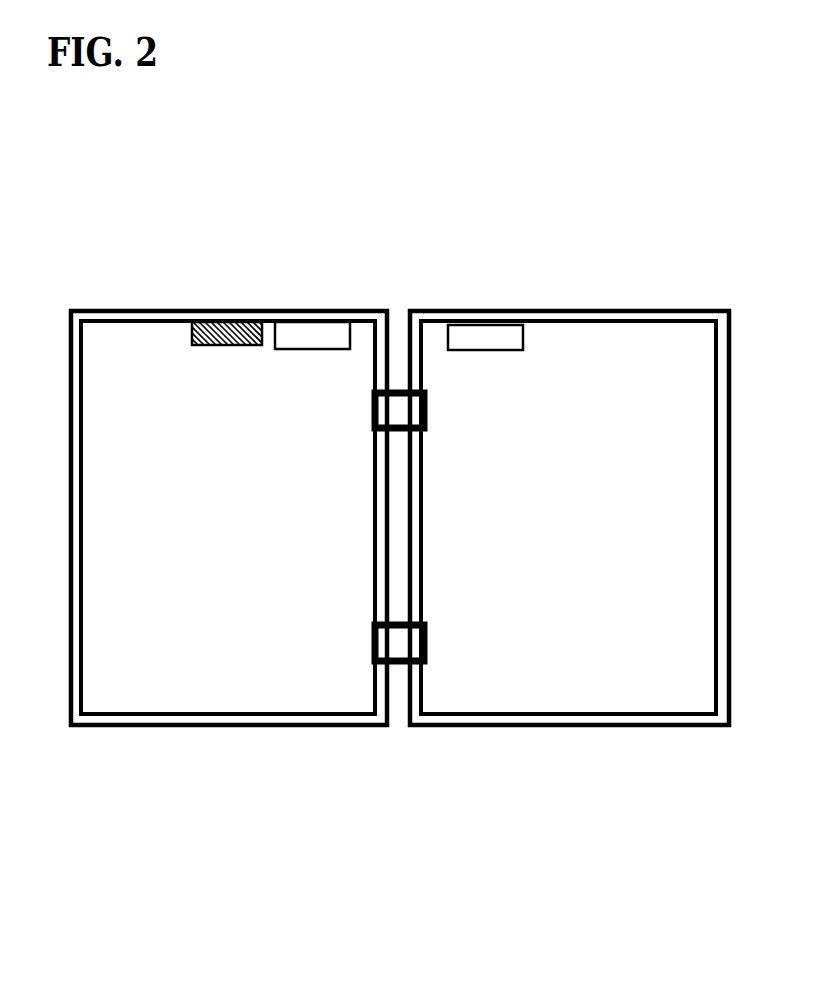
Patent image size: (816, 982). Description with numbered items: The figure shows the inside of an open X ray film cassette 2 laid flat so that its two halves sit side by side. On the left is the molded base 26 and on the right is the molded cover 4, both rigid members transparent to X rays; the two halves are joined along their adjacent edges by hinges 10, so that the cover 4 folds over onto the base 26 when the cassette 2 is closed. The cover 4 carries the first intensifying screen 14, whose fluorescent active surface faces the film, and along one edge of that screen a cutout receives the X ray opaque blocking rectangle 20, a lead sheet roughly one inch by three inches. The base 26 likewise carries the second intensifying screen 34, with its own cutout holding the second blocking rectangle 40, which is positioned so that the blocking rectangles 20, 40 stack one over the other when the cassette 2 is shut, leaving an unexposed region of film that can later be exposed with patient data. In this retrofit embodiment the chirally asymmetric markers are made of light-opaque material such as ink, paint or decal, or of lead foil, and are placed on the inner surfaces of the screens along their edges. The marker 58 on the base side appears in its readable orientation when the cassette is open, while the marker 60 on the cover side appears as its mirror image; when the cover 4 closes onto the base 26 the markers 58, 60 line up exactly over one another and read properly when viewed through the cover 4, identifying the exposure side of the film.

The X ray film cassette 2 is at (400, 554).
The cover 4 is at (593, 730).
The hinges 10 is at (399, 527).
The first intensifying screen 14 is at (600, 612).
The blocking rectangle 20 is at (475, 337).
The base 26 is at (243, 730).
The second intensifying screen 34 is at (238, 611).
The blocking rectangle 40 is at (317, 337).
The marker 58 is at (222, 332).
The marker 60 is at (573, 340).